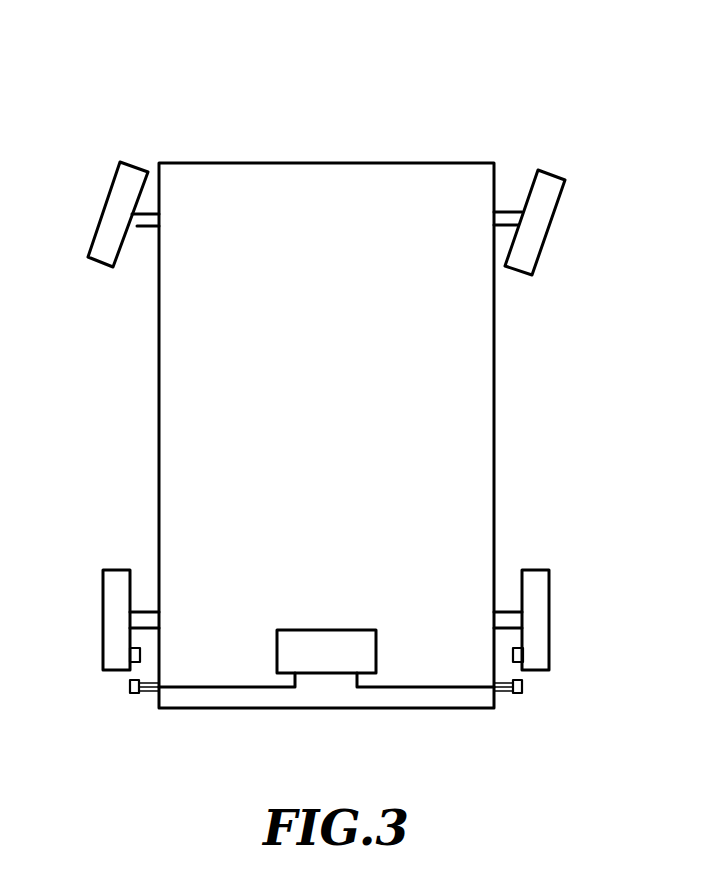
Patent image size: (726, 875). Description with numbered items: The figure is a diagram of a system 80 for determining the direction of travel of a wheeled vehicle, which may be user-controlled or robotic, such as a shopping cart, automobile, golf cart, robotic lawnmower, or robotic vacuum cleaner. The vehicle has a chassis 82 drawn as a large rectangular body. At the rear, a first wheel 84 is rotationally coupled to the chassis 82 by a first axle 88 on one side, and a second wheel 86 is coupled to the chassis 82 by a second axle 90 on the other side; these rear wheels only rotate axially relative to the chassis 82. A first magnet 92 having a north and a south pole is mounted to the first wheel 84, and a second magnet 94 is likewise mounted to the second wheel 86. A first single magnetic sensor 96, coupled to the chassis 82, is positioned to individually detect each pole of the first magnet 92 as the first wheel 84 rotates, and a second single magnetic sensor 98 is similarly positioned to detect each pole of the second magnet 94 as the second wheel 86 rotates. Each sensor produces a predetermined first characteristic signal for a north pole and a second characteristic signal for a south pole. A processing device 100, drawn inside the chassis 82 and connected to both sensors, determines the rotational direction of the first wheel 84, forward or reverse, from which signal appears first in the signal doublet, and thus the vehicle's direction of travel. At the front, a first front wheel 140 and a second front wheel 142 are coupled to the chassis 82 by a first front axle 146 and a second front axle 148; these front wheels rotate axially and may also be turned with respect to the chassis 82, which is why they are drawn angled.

The system 80 is at (203, 92).
The chassis 82 is at (494, 434).
The first wheel 84 is at (104, 620).
The second wheel 86 is at (549, 620).
The first axle 88 is at (143, 610).
The second axle 90 is at (511, 610).
The first magnet 92 is at (131, 655).
The second magnet 94 is at (523, 655).
The first single magnetic sensor 96 is at (129, 688).
The second single magnetic sensor 98 is at (523, 688).
The processing device 100 is at (335, 630).
The first front wheel 140 is at (104, 210).
The second front wheel 142 is at (548, 233).
The first front axle 146 is at (146, 229).
The second front axle 148 is at (512, 210).